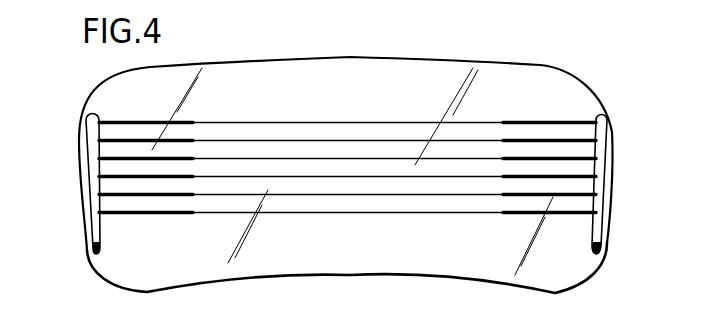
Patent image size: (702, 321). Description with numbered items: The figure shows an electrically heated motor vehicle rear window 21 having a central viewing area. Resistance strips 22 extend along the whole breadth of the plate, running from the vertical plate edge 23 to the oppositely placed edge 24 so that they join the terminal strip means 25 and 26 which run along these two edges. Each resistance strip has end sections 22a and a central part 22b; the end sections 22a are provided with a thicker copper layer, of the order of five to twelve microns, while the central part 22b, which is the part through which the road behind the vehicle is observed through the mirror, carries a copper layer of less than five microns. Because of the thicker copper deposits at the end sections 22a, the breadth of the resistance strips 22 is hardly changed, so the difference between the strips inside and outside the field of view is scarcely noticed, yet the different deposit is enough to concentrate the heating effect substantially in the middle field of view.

The electrically heated motor vehicle window 21 is at (288, 267).
The resistance strips 22 is at (347, 153).
The end sections of the resistance strips 22a is at (157, 193).
The central part of the resistance strips 22b is at (311, 140).
The vertical plate edge 23 is at (83, 221).
The oppositely placed edge 24 is at (606, 243).
The terminal strip means 25 is at (86, 130).
The terminal strip means 26 is at (615, 143).